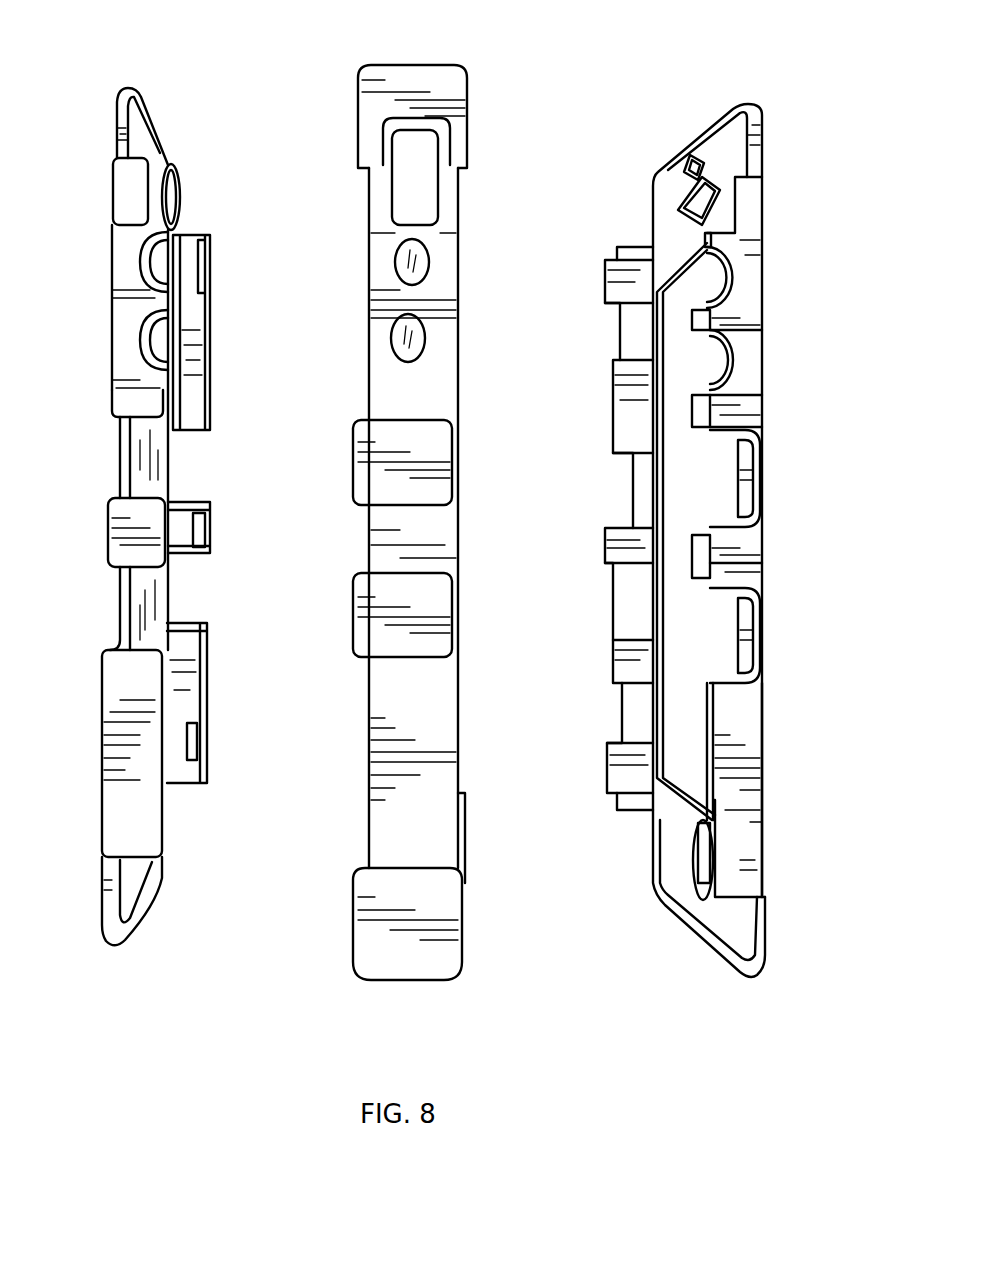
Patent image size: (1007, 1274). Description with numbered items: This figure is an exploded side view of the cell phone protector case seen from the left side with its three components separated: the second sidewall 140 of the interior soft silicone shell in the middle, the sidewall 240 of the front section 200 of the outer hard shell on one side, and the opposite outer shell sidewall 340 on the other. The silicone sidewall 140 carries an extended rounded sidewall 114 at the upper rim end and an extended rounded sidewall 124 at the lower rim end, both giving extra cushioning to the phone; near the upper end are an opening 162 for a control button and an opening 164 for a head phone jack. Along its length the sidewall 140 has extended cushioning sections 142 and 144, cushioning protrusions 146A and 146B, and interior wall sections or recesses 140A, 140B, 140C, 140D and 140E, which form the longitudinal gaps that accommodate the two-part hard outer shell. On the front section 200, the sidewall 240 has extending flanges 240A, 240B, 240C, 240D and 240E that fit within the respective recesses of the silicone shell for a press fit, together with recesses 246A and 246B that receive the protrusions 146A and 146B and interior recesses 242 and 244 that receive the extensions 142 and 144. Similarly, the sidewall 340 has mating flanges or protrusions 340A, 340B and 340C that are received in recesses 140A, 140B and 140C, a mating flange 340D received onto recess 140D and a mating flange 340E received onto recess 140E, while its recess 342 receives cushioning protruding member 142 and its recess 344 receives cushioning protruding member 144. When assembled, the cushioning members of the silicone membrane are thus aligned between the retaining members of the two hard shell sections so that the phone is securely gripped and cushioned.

The front section 200 is at (752, 38).
The extended rounded sidewall 114 is at (390, 75).
The opening for a head phone jack 164 is at (441, 73).
The opening for a control button 162 is at (430, 185).
The extended rounded sidewall 124 is at (372, 938).
The second sidewall 140 is at (415, 497).
The interior wall section 140A is at (395, 232).
The interior wall section 140B is at (418, 302).
The recess 140C is at (445, 380).
The interior wall section 140D is at (445, 516).
The interior wall section 140E is at (445, 700).
The extended cushioning section 142 is at (366, 480).
The extended cushioning section 144 is at (366, 640).
The cushioning protrusion 146A is at (395, 264).
The cushioning protrusion 146B is at (392, 338).
The sidewall 240 is at (762, 158).
The extending flange 240A is at (737, 252).
The extending flange 240B is at (745, 325).
The extending flange 240C is at (752, 397).
The extending flange 240D is at (752, 555).
The extending flange 240E is at (760, 738).
The interior recess 242 is at (760, 480).
The interior recess 244 is at (762, 637).
The recess 246A is at (733, 295).
The recess 246B is at (732, 358).
The sidewall 340 is at (114, 516).
The mating flange 340A is at (150, 236).
The mating flange 340B is at (145, 310).
The mating flange 340C is at (118, 407).
The mating flange 340D is at (108, 548).
The mating flange 340E is at (104, 683).
The recess 342 is at (120, 447).
The recess 344 is at (122, 594).